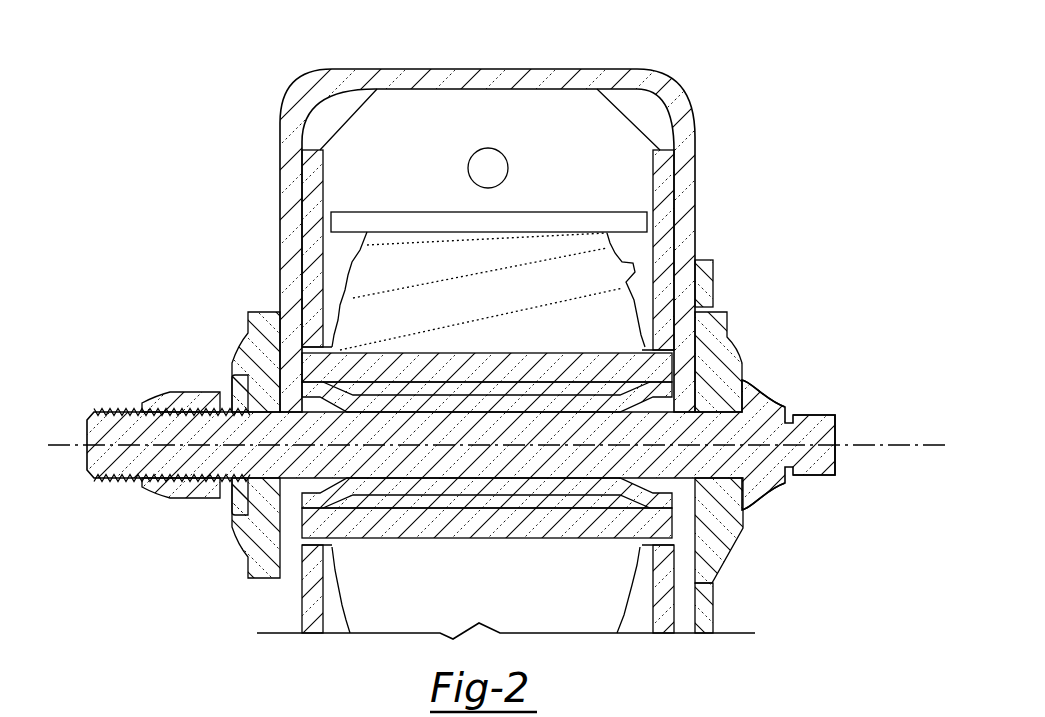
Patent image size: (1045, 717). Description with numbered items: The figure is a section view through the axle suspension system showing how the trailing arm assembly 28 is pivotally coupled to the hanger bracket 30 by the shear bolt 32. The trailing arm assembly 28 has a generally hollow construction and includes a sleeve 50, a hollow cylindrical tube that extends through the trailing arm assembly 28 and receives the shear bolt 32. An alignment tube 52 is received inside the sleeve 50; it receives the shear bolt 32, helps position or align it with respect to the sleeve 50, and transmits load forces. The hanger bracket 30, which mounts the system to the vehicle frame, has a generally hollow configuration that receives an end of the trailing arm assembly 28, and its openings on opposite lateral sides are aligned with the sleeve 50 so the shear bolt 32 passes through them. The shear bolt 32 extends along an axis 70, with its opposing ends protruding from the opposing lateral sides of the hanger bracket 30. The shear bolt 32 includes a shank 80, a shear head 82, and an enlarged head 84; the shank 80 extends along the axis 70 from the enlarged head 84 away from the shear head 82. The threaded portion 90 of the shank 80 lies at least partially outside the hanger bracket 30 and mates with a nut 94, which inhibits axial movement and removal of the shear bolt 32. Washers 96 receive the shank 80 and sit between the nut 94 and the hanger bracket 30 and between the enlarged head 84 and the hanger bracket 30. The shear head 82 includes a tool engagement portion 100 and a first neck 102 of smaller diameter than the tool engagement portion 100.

The trailing arm assembly 28 is at (320, 182).
The hanger bracket 30 is at (628, 68).
The shear bolt 32 is at (103, 410).
The sleeve 50 is at (403, 357).
The alignment tube 52 is at (582, 403).
The axis 70 is at (888, 448).
The shank 80 is at (461, 445).
The shear head 82 is at (830, 415).
The enlarged head 84 is at (760, 397).
The threaded portion 90 is at (123, 480).
The nut 94 is at (187, 392).
The washers 96 is at (248, 318).
The tool engagement portion 100 is at (787, 483).
The first neck 102 is at (735, 511).